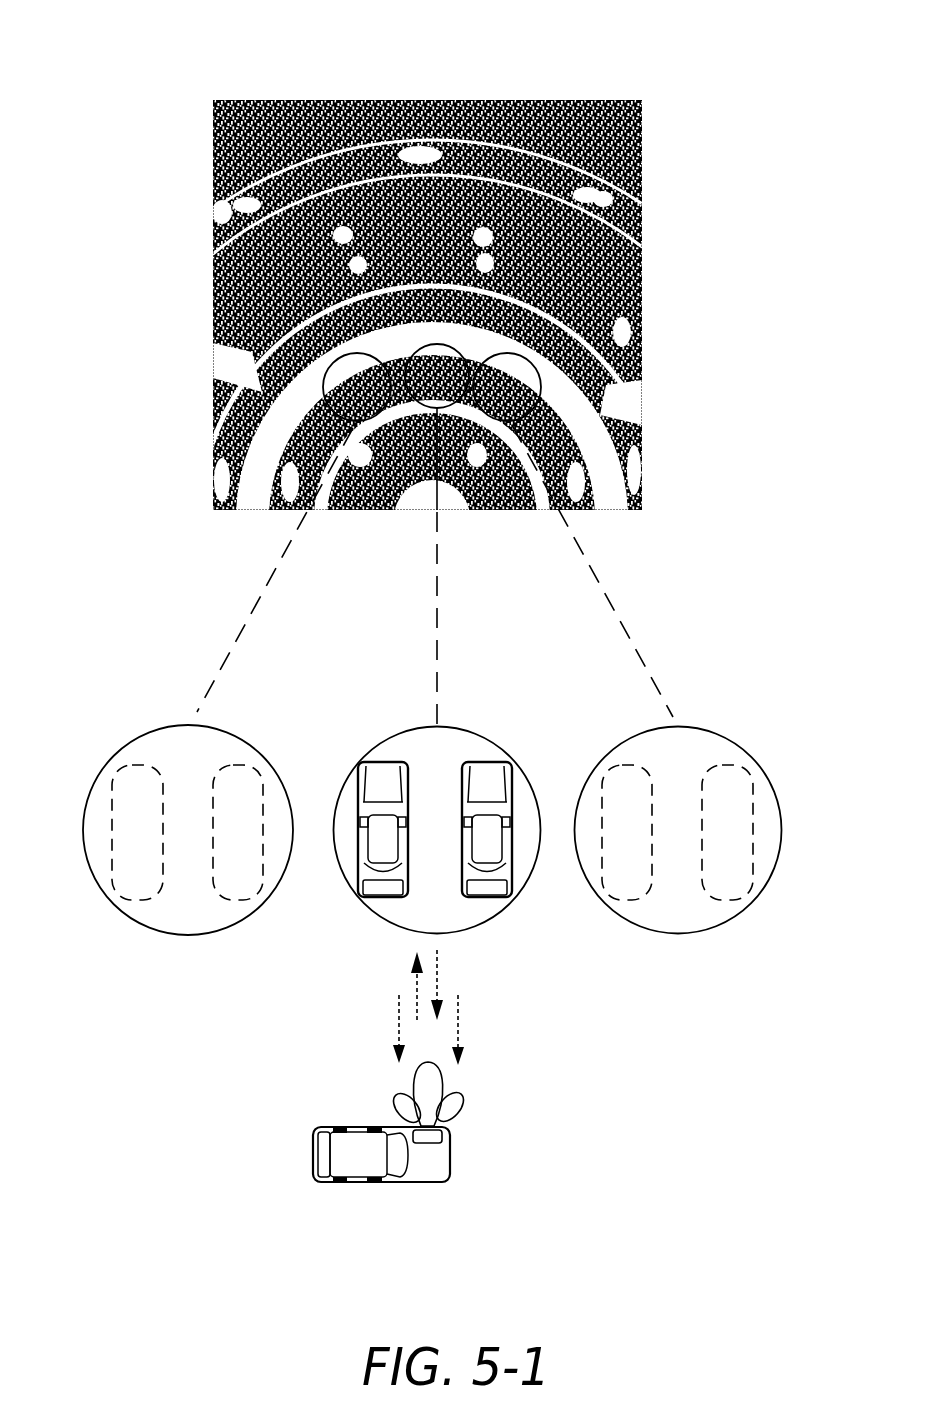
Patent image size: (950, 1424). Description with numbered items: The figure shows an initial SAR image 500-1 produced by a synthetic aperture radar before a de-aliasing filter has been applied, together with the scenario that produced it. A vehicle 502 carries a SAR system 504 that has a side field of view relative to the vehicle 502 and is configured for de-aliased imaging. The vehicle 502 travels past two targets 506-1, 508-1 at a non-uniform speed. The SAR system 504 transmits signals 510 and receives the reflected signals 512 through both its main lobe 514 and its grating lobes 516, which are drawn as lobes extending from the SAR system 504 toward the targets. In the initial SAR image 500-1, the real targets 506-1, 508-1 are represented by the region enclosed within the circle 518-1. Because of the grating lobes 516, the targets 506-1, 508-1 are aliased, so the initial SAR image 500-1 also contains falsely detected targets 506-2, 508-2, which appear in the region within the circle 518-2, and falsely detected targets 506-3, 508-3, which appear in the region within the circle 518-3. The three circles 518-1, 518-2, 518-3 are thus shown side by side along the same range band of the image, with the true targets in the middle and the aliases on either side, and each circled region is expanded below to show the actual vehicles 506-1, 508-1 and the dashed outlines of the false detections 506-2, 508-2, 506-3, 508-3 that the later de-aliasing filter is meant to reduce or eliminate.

The initial SAR image 500-1 is at (132, 41).
The vehicle 502 is at (313, 1153).
The SAR system 504 is at (430, 1140).
The target 506-1 is at (385, 900).
The falsely detected target 506-2 is at (138, 763).
The falsely detected target 506-3 is at (627, 762).
The target 508-1 is at (487, 900).
The falsely detected target 508-2 is at (235, 763).
The falsely detected target 508-3 is at (723, 762).
The signals 510 is at (417, 985).
The reflected signals 512 is at (458, 1028).
The main lobe 514 is at (443, 1077).
The grating lobes 516 is at (395, 1102).
The circle 518-1 is at (423, 410).
The circle 518-2 is at (324, 387).
The circle 518-3 is at (540, 393).